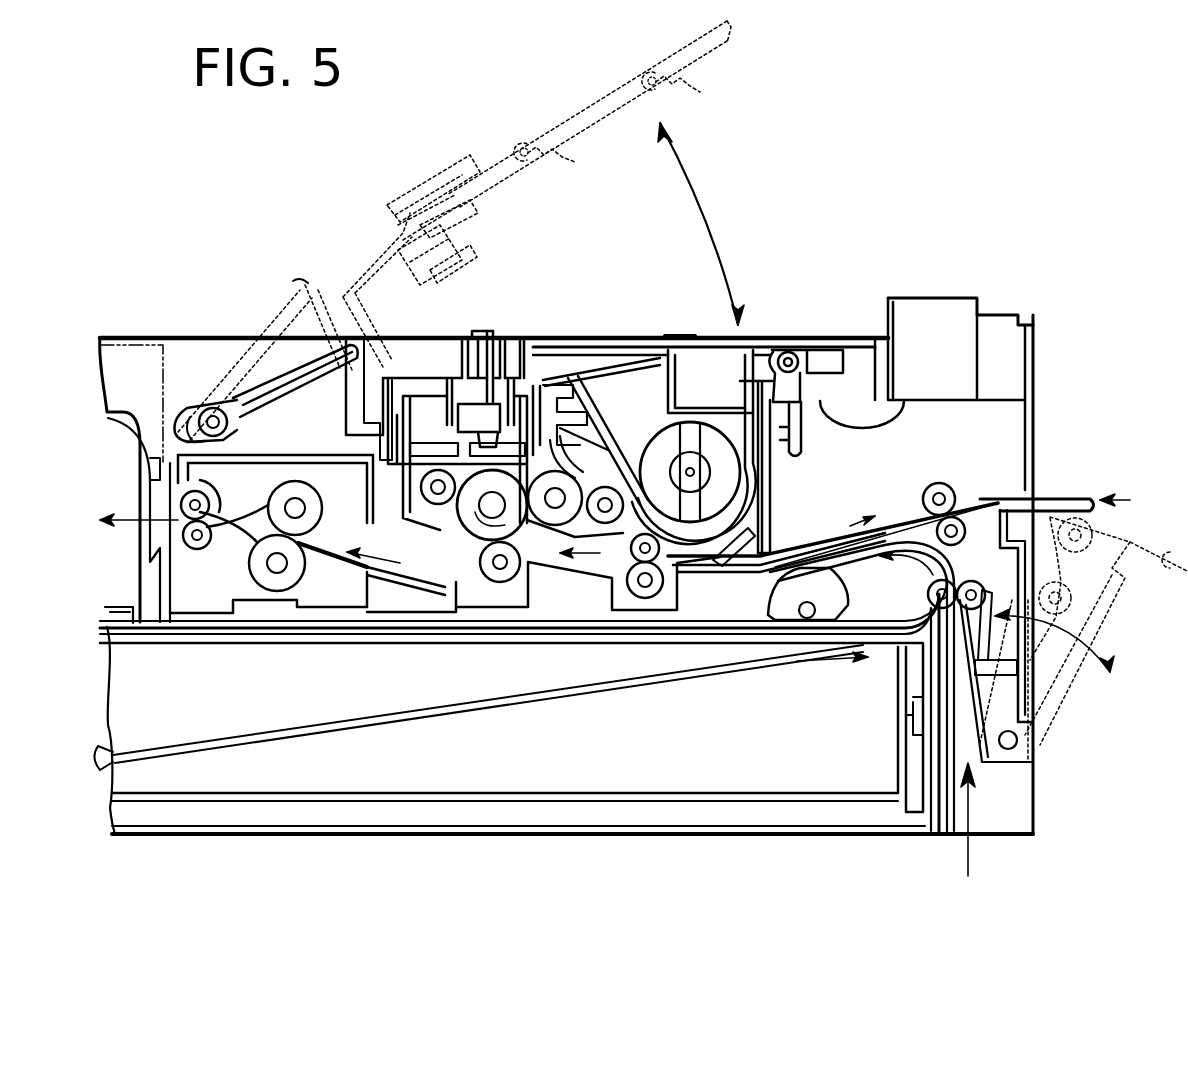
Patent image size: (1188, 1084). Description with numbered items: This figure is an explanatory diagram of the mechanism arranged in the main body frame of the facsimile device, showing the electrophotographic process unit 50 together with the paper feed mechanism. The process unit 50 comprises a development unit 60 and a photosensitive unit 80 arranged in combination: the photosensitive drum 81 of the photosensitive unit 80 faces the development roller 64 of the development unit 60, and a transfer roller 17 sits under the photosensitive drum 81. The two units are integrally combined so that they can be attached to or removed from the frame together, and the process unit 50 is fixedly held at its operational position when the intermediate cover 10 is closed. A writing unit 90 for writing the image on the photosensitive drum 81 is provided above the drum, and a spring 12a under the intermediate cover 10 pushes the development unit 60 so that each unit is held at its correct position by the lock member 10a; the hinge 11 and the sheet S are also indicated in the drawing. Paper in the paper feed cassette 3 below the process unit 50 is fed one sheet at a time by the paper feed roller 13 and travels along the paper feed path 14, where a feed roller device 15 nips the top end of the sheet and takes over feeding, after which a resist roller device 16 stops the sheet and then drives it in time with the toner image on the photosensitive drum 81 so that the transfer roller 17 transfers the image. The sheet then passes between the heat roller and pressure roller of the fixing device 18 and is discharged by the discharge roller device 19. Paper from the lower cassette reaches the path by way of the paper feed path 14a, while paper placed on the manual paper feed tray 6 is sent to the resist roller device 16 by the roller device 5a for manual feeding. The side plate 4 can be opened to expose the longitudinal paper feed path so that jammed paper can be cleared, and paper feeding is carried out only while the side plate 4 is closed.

The paper feed cassette 3 is at (523, 797).
The side plate 4 is at (1035, 668).
The roller device for manual paper feeding 5a is at (943, 490).
The manual paper feed tray 6 is at (1078, 508).
The intermediate cover 10 is at (495, 163).
The lock member 10a is at (805, 430).
The hinge 11 is at (205, 417).
The spring 12a is at (700, 92).
The paper feed roller 13 is at (770, 610).
The paper feed path 14 is at (910, 530).
The paper feed path 14a is at (960, 826).
The feed roller device 15 is at (937, 598).
The resist roller device 16 is at (635, 587).
The transfer roller 17 is at (507, 578).
The fixing device 18 is at (317, 560).
The discharge roller device 19 is at (180, 508).
The electrophotographic process unit 50 is at (672, 314).
The development unit 60 is at (698, 395).
The development roller 64 is at (555, 520).
The photosensitive unit 80 is at (473, 551).
The photosensitive drum 81 is at (472, 530).
The writing unit 90 is at (470, 412).
The sheet S is at (735, 560).